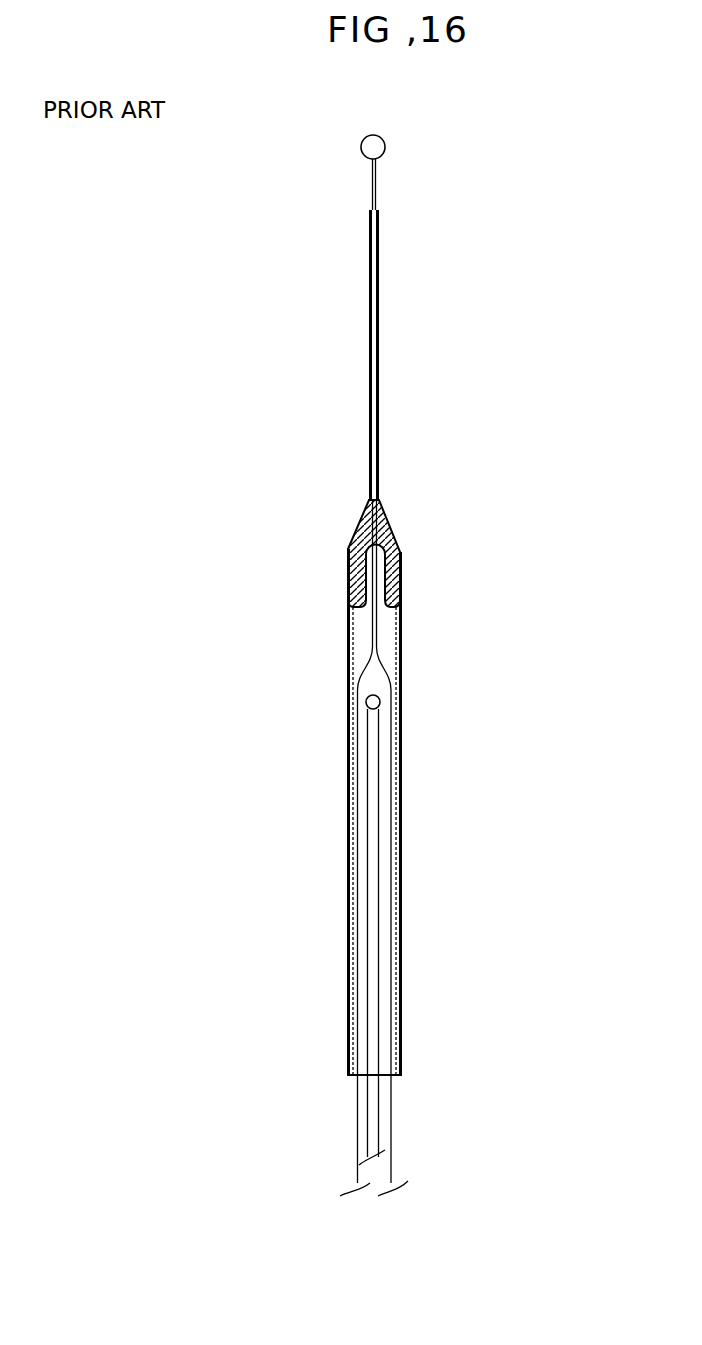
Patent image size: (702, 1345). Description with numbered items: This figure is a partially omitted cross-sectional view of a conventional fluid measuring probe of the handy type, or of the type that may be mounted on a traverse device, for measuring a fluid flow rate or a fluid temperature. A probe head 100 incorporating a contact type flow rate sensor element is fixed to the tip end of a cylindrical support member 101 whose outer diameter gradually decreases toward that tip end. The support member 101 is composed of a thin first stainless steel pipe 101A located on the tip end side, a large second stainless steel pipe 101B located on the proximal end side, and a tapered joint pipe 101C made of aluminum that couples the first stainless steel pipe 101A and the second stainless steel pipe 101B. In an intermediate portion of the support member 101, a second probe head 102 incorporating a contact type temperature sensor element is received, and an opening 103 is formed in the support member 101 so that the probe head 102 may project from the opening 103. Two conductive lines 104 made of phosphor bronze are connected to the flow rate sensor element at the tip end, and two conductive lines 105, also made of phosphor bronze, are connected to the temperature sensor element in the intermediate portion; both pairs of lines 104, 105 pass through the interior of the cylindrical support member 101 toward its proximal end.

The probe head 100 is at (385, 144).
The support member 101 is at (476, 642).
The first stainless steel pipe 101A is at (380, 445).
The second stainless steel pipe 101B is at (405, 578).
The tapered joint pipe 101C is at (395, 527).
The probe head 102 is at (380, 703).
The opening 103 is at (348, 713).
The conductive lines 104 is at (365, 202).
The conductive lines 105 is at (368, 841).